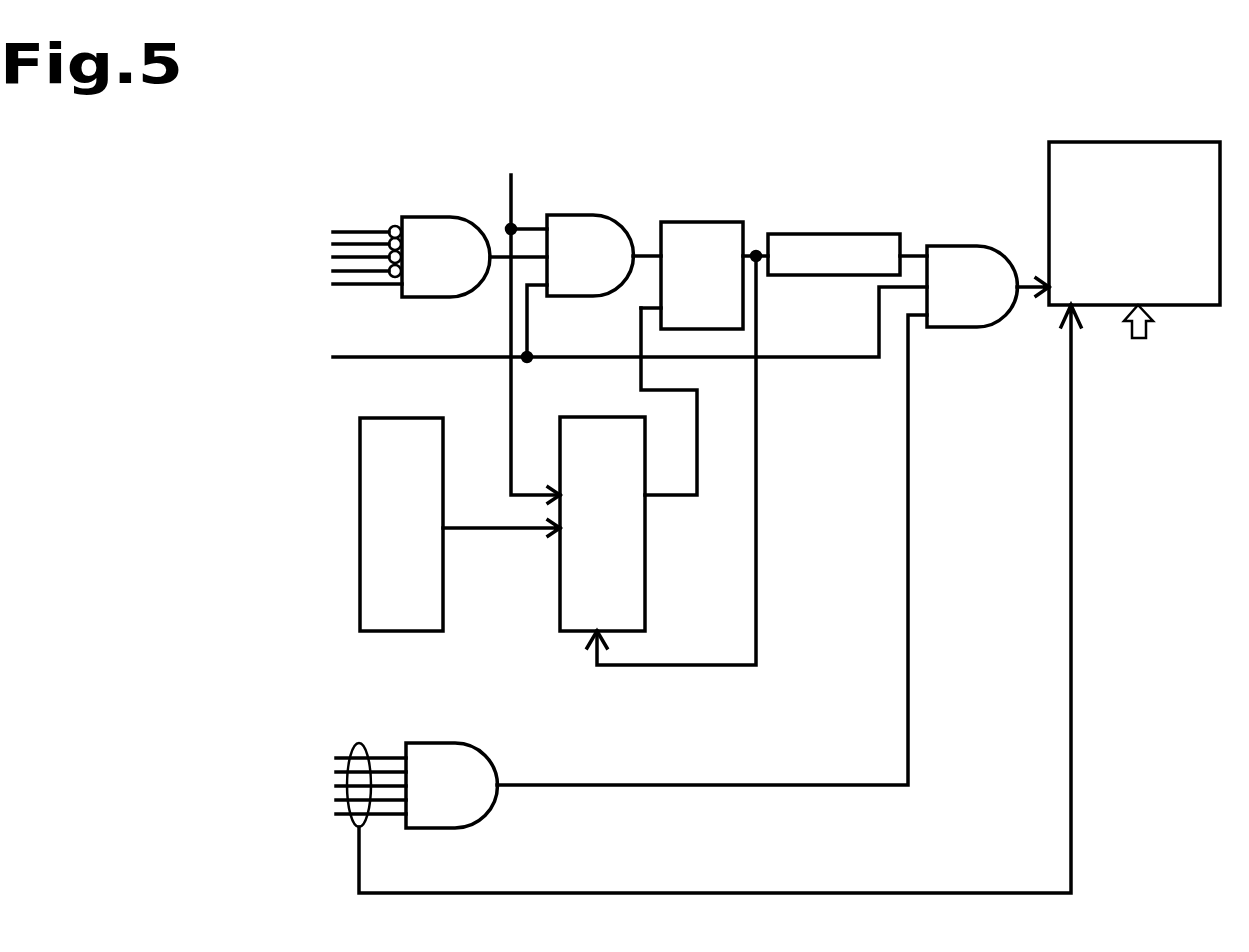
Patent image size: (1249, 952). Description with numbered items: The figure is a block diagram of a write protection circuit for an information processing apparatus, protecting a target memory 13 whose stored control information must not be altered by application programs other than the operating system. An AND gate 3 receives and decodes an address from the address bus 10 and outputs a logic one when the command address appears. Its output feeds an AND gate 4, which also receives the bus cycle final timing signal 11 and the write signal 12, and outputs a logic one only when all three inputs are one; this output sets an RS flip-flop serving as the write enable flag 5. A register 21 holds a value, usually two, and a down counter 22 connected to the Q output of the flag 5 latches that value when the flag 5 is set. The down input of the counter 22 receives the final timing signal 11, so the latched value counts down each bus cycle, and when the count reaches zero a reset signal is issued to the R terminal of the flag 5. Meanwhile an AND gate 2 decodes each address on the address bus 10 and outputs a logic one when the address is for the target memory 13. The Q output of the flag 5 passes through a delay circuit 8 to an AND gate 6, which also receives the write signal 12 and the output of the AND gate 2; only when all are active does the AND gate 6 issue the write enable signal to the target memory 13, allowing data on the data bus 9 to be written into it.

The AND gate 2 is at (478, 820).
The AND gate 3 is at (427, 298).
The AND gate 4 is at (573, 215).
The write enable flag 5 is at (715, 204).
The AND gate 6 is at (955, 328).
The delay circuit 8 is at (820, 276).
The data bus 9 is at (1181, 351).
The address bus 10 is at (321, 266).
The bus cycle final timing signal 11 is at (489, 293).
The write signal 12 is at (321, 357).
The target memory 13 is at (1117, 140).
The register 21 is at (400, 633).
The down counter 22 is at (575, 633).